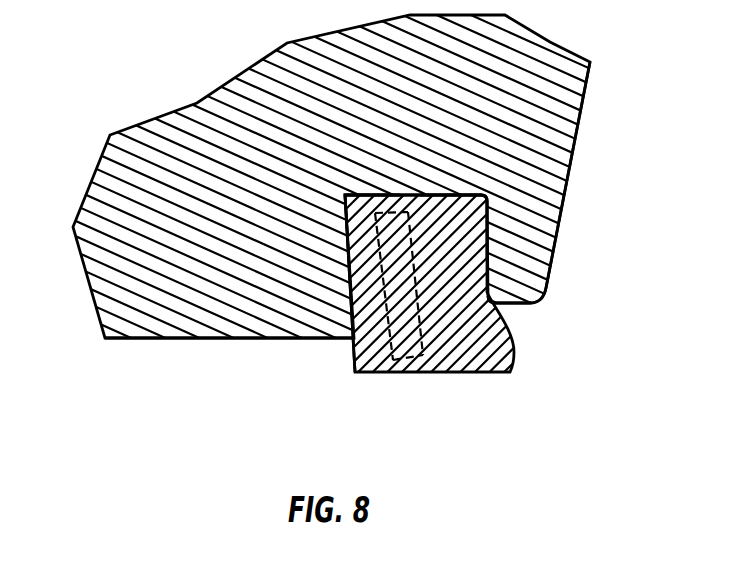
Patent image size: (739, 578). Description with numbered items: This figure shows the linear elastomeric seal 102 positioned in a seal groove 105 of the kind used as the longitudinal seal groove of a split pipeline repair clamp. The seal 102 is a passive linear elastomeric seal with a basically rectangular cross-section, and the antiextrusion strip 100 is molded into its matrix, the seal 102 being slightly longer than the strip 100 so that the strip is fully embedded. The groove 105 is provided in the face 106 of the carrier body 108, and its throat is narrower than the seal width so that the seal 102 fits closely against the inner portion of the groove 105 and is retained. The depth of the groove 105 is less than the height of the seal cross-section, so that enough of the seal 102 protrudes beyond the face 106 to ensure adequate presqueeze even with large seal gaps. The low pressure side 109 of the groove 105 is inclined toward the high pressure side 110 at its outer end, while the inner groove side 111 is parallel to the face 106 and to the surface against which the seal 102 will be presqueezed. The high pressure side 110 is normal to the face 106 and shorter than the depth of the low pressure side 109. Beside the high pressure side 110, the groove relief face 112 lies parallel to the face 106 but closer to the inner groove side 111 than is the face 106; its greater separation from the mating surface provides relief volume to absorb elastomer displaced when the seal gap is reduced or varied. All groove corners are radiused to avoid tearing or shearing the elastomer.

The antiextrusion strip 100 is at (423, 312).
The linear elastomeric seal 102 is at (373, 373).
The seal groove 105 is at (362, 193).
The face 106 is at (132, 340).
The carrier body 108 is at (197, 103).
The low pressure side 109 is at (351, 247).
The high pressure side 110 is at (490, 243).
The inner groove side 111 is at (473, 192).
The groove relief face 112 is at (525, 305).